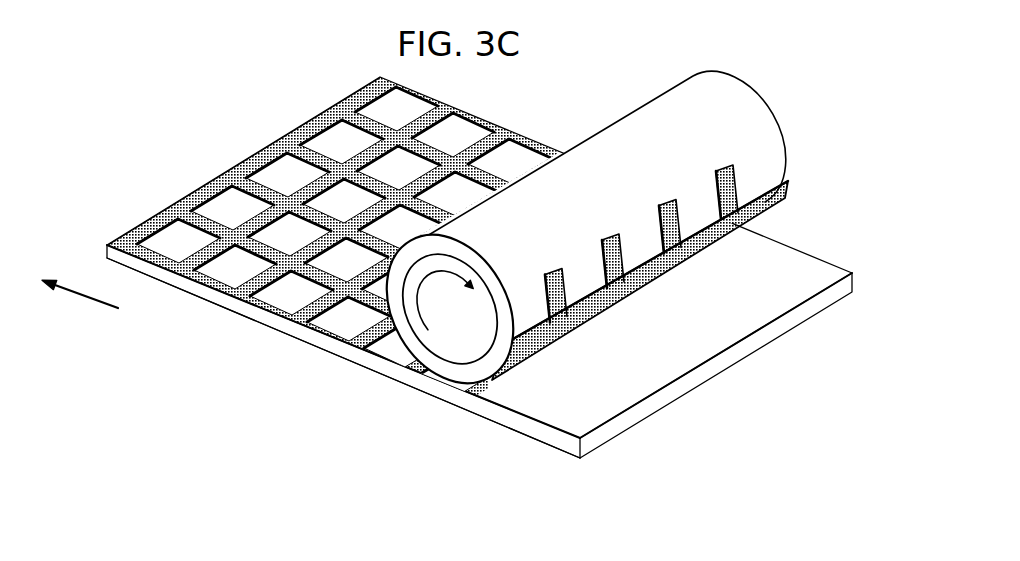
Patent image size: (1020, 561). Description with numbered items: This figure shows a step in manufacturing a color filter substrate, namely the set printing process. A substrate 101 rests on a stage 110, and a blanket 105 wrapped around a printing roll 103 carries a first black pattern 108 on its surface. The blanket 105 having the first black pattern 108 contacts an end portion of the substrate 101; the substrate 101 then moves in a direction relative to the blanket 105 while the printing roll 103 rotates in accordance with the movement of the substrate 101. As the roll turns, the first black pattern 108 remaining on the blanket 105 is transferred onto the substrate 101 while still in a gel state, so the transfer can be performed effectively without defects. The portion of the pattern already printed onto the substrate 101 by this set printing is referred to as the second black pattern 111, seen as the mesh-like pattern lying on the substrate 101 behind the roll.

The substrate 101 is at (735, 350).
The printing roll 103 is at (462, 333).
The blanket 105 is at (620, 281).
The first black pattern 108 is at (740, 185).
The stage 110 is at (550, 440).
The second black pattern 111 is at (228, 292).